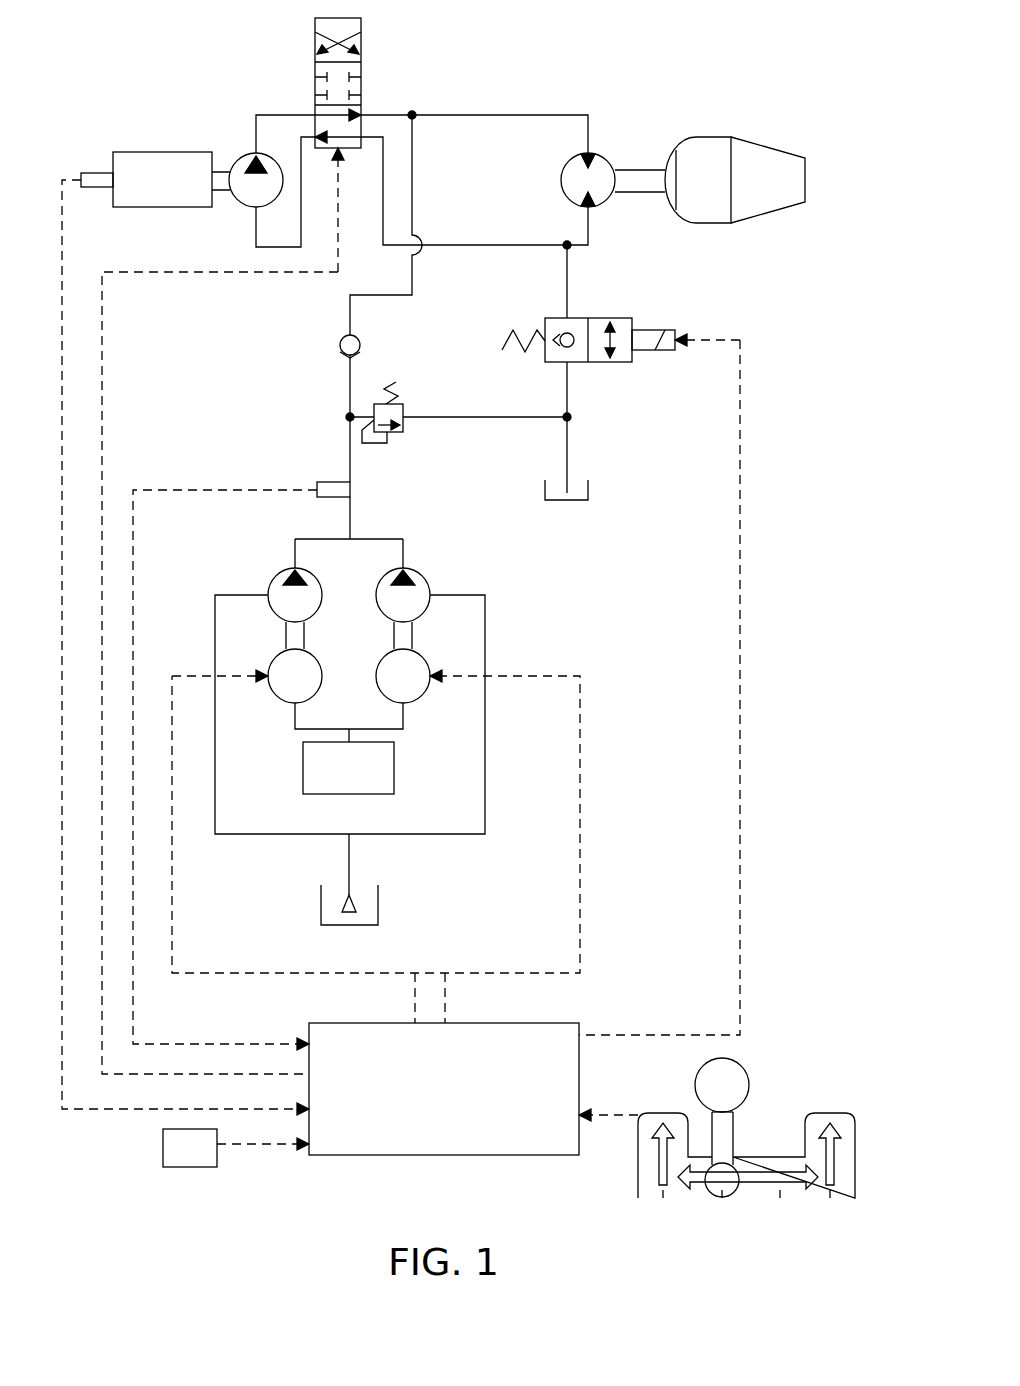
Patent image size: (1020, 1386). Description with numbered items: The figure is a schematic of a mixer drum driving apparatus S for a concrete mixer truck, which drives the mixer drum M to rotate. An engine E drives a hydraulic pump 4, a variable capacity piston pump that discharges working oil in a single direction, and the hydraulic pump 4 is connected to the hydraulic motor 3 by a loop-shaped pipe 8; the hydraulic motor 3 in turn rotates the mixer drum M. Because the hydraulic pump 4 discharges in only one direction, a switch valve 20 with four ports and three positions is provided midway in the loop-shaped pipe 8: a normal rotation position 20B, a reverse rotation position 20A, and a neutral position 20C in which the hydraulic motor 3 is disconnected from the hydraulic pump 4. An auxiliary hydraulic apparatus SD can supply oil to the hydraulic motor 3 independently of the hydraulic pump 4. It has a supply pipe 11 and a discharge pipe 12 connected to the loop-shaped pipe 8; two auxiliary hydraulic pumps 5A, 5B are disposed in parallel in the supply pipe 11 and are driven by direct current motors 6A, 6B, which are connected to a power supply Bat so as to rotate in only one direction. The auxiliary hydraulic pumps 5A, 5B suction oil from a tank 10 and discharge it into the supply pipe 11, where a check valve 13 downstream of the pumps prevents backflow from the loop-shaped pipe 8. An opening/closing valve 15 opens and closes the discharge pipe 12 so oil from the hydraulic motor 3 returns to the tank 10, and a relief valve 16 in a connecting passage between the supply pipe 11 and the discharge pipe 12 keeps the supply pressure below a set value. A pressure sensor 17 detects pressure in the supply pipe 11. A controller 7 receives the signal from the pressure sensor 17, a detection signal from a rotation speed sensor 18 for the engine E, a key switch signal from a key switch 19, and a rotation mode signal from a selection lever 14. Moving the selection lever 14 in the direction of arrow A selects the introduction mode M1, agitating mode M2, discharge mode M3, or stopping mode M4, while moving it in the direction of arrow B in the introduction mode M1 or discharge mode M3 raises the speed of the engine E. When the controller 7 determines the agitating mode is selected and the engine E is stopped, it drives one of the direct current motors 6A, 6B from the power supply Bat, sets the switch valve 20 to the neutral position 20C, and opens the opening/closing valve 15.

The rotation speed sensor 18 is at (97, 173).
The engine E is at (175, 152).
The mixer drum driving apparatus S is at (247, 100).
The hydraulic pump 4 is at (240, 205).
The switch valve 20 is at (294, 542).
The reverse rotation position 20A is at (360, 44).
The neutral position 20C is at (360, 78).
The normal rotation position 20B is at (373, 107).
The loop-shaped pipe 8 is at (511, 115).
The hydraulic motor 3 is at (597, 153).
The mixer drum M is at (760, 137).
The opening/closing valve 15 is at (603, 315).
The check valve 13 is at (339, 352).
The supply pipe 11 is at (350, 390).
The relief valve 16 is at (403, 408).
The discharge pipe 12 is at (569, 398).
The tank 10 is at (590, 487).
The auxiliary hydraulic apparatus SD is at (244, 446).
The pressure sensor 17 is at (323, 482).
The auxiliary hydraulic pump 5A is at (275, 576).
The auxiliary hydraulic pump 5B is at (422, 574).
The direct current motor 6A is at (318, 662).
The direct current motor 6B is at (426, 662).
The power supply Bat is at (383, 772).
The controller 7 is at (437, 1140).
The key switch 19 is at (190, 1167).
The selection lever 14 is at (734, 1131).
The arrow A is at (768, 1176).
The arrow B is at (659, 1160).
The introduction mode M1 is at (663, 1215).
The agitating mode M2 is at (722, 1215).
The discharge mode M3 is at (830, 1215).
The stopping mode M4 is at (780, 1215).